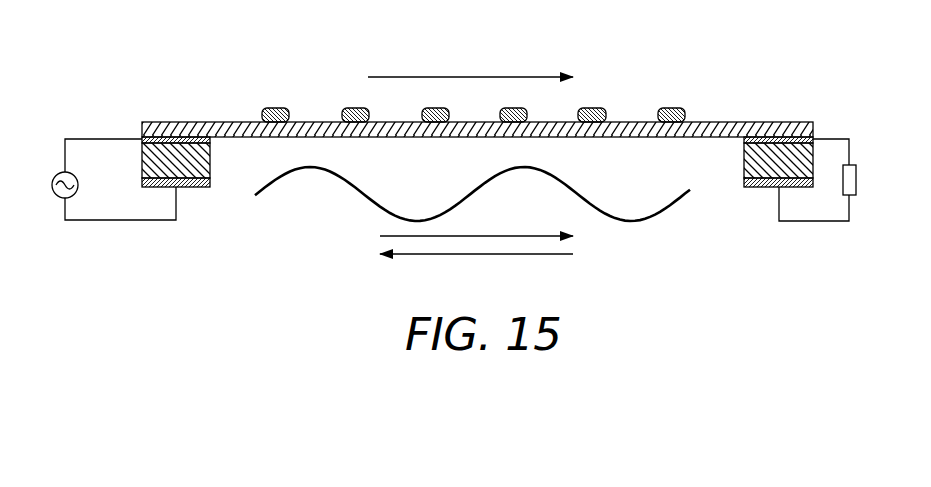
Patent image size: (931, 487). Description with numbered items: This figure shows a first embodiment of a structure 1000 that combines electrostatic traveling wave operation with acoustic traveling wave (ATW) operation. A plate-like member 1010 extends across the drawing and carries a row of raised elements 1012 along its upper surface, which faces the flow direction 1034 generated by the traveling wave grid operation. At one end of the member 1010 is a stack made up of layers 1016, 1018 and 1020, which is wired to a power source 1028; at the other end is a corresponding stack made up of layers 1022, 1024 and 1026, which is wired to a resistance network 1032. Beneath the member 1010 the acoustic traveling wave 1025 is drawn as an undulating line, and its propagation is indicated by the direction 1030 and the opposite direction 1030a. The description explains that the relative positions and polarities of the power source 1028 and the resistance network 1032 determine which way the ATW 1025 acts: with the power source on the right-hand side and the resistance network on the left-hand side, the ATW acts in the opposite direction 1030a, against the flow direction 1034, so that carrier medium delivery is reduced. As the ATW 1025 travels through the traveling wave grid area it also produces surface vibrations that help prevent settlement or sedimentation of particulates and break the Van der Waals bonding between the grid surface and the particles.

The energy harvesting device 1000 is at (640, 40).
The flexible plate / substrate 1010 is at (805, 124).
The protrusions / bumps on plate 1012 is at (360, 108).
The left piezoelectric actuator element 1016 is at (208, 165).
The top electrode of left piezoelectric element 1018 is at (172, 137).
The bottom electrode of left piezoelectric element 1020 is at (185, 187).
The right piezoelectric generator element 1022 is at (747, 168).
The top electrode of right piezoelectric element 1024 is at (781, 137).
The acoustic traveling wave 1025 is at (586, 193).
The bottom electrode of right piezoelectric element 1026 is at (771, 190).
The power source 1028 is at (78, 192).
The wave propagation direction 1030 is at (487, 236).
The opposite direction of the acoustic traveling wave 1030a is at (490, 254).
The resistance network 1032 is at (858, 196).
The flow direction 1034 is at (515, 78).